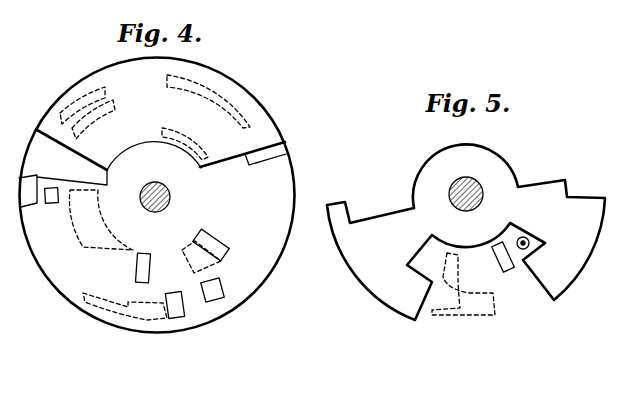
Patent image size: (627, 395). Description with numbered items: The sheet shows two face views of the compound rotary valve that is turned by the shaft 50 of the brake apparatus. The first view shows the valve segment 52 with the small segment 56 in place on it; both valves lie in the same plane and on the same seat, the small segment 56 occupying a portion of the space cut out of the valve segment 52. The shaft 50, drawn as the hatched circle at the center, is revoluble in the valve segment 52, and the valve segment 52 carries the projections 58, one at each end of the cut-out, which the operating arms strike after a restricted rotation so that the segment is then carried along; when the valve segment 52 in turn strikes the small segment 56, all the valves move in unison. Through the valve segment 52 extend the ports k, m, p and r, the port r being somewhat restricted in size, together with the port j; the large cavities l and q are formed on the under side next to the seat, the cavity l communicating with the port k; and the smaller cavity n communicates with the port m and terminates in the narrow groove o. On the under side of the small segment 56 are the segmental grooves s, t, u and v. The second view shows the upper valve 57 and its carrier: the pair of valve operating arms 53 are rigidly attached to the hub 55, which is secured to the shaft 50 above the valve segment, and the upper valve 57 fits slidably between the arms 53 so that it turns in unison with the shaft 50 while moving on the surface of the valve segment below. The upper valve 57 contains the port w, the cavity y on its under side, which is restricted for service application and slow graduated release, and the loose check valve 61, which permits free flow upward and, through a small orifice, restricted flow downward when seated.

In FIG. 4, the shaft 50 is at (170, 194).
In FIG. 5, the shaft 50 is at (472, 184).
In FIG. 4, the valve segment 52 is at (157, 195).
In FIG. 5, the valve operating arms 53 is at (466, 232).
In FIG. 5, the hub 55 is at (465, 176).
In FIG. 4, the small segment 56 is at (161, 143).
In FIG. 5, the upper valve 57 is at (531, 311).
In FIG. 4, the projections 58 is at (26, 184).
In FIG. 5, the loose check valve 61 is at (531, 245).
In FIG. 4, the segmental groove t is at (89, 96).
In FIG. 4, the segmental groove s is at (82, 131).
In FIG. 4, the segmental groove v is at (243, 108).
In FIG. 4, the segmental groove u is at (201, 148).
In FIG. 4, the port r is at (51, 204).
In FIG. 4, the cavity q is at (83, 248).
In FIG. 4, the port p is at (135, 265).
In FIG. 4, the port k is at (207, 232).
In FIG. 4, the cavity l is at (190, 262).
In FIG. 4, the narrow groove o is at (107, 308).
In FIG. 4, the cavity n is at (148, 320).
In FIG. 4, the port m is at (178, 310).
In FIG. 4, the contact j is at (217, 295).
In FIG. 5, the port w is at (506, 262).
In FIG. 5, the cavity y is at (482, 316).